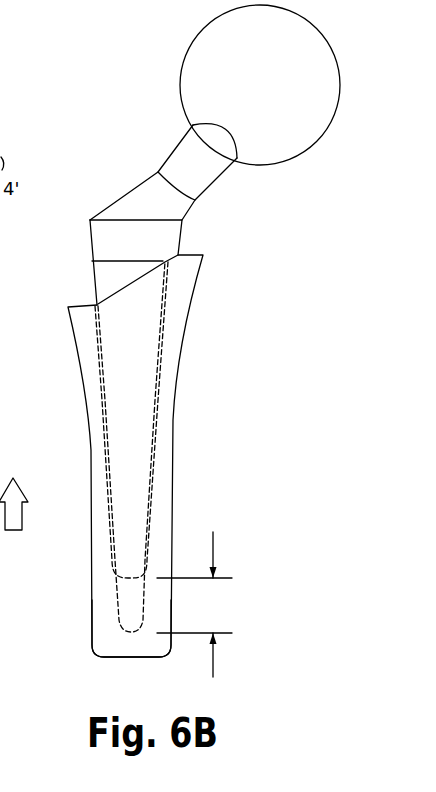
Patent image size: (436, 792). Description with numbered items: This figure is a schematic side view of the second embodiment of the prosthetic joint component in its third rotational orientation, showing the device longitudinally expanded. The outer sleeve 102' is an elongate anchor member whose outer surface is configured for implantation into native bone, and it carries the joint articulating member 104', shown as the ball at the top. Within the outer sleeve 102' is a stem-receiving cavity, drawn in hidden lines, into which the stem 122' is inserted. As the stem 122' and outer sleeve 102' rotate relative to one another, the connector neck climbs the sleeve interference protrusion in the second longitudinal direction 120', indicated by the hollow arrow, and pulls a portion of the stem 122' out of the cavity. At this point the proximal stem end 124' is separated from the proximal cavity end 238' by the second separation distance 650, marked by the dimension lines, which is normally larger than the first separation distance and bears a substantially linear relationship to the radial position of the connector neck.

The outer sleeve 102' is at (172, 390).
The joint articulating member 104' is at (290, 102).
The second longitudinal direction 120' is at (37, 519).
The stem 122' is at (168, 420).
The proximal stem end 124' is at (96, 628).
The proximal cavity end 238' is at (134, 484).
The second separation distance 650 is at (194, 604).